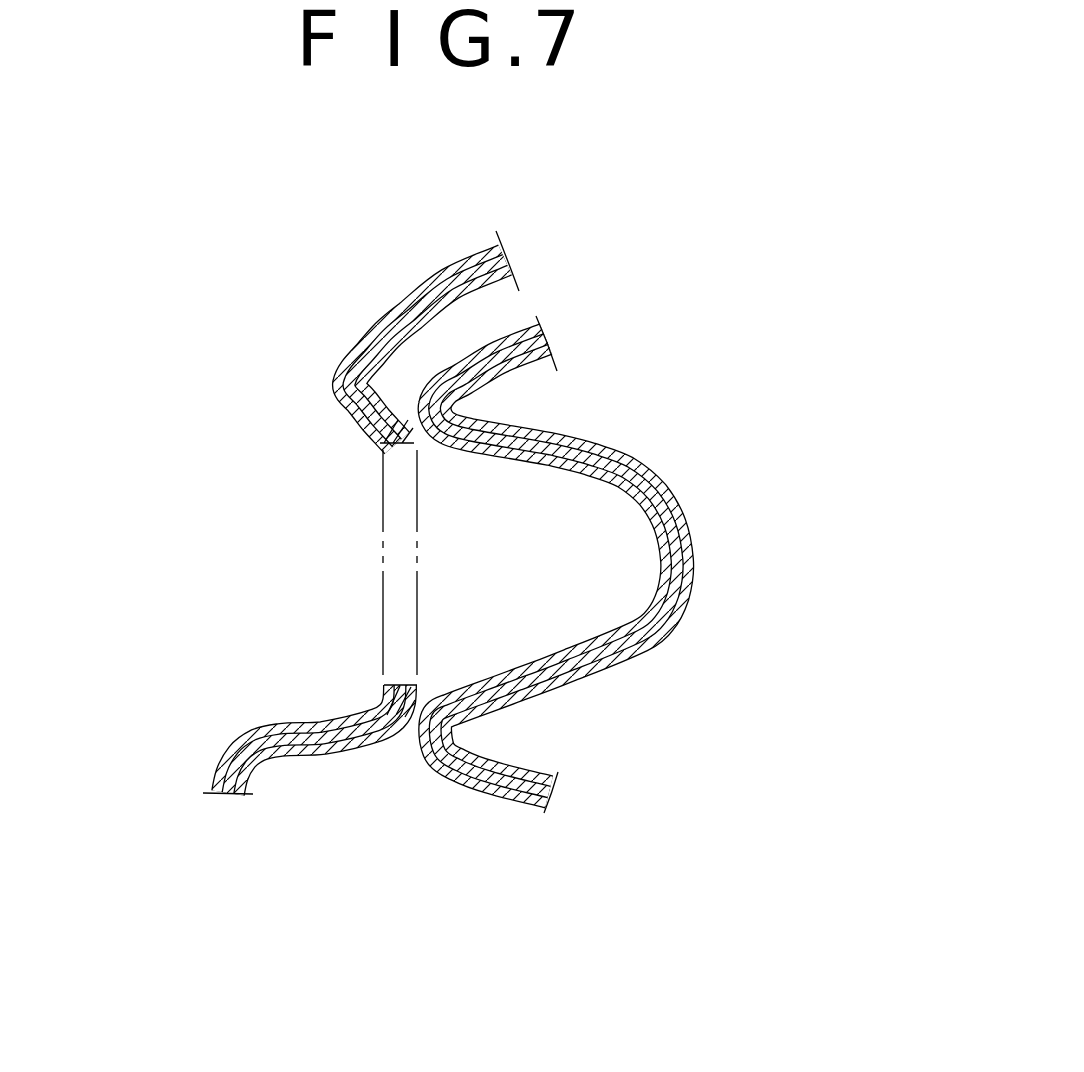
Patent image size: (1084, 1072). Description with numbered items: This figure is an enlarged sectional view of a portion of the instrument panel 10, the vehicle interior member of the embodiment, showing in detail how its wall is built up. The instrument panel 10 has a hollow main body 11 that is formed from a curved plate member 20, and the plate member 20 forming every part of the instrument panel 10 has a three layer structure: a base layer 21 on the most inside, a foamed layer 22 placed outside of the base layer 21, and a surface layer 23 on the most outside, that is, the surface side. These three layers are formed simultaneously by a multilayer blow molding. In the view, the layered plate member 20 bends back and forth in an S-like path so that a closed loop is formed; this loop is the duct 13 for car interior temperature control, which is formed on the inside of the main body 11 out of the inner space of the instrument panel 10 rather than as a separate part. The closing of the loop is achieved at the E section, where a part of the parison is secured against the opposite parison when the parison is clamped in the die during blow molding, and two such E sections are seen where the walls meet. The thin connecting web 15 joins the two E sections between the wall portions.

The instrument panel 10 is at (522, 595).
The main body 11 is at (420, 290).
The duct 13 is at (577, 513).
The tongue portion 15 is at (393, 612).
The plate member 20 is at (551, 595).
The base layer 21 is at (503, 557).
The foamed layer 22 is at (503, 557).
The surface layer 23 is at (503, 557).
The E section E is at (378, 428).